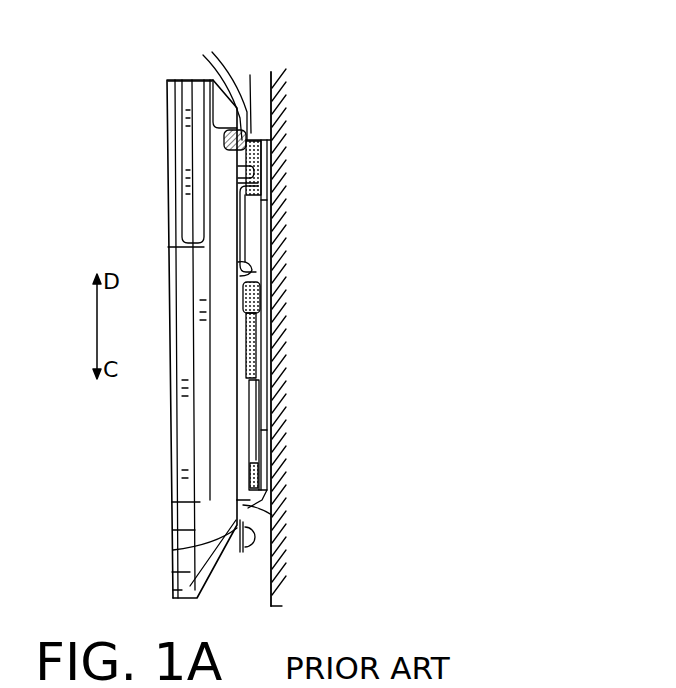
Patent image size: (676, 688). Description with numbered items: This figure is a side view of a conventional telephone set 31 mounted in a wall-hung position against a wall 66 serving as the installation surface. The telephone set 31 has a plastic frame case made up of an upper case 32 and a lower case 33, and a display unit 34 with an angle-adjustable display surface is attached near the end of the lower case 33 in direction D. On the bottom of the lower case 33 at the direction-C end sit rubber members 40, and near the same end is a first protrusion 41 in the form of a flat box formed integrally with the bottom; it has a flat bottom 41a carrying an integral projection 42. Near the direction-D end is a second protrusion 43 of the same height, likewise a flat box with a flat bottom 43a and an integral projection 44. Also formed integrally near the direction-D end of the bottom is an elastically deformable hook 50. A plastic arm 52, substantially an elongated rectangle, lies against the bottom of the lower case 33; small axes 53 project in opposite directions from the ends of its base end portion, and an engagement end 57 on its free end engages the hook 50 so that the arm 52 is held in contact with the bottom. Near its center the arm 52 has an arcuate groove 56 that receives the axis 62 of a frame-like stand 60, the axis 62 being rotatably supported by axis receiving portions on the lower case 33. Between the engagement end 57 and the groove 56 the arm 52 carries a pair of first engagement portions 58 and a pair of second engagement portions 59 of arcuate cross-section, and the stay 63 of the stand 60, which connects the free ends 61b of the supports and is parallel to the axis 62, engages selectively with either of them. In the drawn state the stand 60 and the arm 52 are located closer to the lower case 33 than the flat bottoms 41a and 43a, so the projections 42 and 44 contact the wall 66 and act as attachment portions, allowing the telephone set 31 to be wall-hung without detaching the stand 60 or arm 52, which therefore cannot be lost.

The telephone set 31 is at (145, 200).
The upper case 32 is at (170, 462).
The lower case 33 is at (215, 83).
The display unit 34 is at (165, 92).
The rubber member 40 is at (280, 558).
The first protrusion 41 is at (277, 505).
The flat bottom 41a is at (278, 433).
The projection 42 is at (277, 473).
The second protrusion 43 is at (273, 223).
The flat bottom 43a is at (273, 263).
The projection 44 is at (268, 210).
The hook 50 is at (243, 92).
The arm 52 is at (277, 383).
The small axis 53 is at (275, 493).
The groove 56 is at (273, 313).
The engagement end 57 is at (268, 140).
The first engagement portion 58 is at (268, 185).
The second engagement portion 59 is at (273, 273).
The stand 60 is at (280, 135).
The free end 61b is at (219, 85).
The axis 62 is at (243, 300).
The stay 63 is at (244, 171).
The wall 66 is at (268, 82).